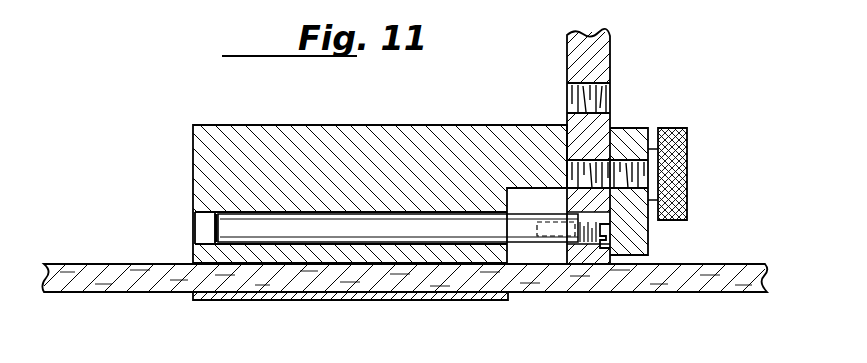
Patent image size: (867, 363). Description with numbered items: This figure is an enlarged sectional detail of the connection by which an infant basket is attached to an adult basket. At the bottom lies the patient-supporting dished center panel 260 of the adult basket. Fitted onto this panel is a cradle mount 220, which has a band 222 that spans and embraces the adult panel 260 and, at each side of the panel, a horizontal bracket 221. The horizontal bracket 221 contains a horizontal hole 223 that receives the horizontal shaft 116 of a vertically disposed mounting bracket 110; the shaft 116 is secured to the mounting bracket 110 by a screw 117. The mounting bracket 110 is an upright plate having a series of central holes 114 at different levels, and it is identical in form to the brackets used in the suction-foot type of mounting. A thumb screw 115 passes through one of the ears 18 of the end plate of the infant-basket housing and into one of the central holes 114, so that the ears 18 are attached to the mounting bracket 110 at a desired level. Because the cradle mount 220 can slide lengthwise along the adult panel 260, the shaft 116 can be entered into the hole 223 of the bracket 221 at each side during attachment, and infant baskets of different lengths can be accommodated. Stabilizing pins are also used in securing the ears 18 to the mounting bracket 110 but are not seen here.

The mounting bracket 110 is at (599, 44).
The central holes 114 is at (613, 100).
The ears 18 is at (640, 128).
The thumb screw 115 is at (673, 172).
The horizontal shaft 116 is at (222, 228).
The screw 117 is at (632, 250).
The cradle mount 220 is at (183, 122).
The horizontal bracket 221 is at (340, 155).
The band 222 is at (484, 297).
The horizontal hole 223 is at (203, 215).
The center panel 260 is at (85, 270).